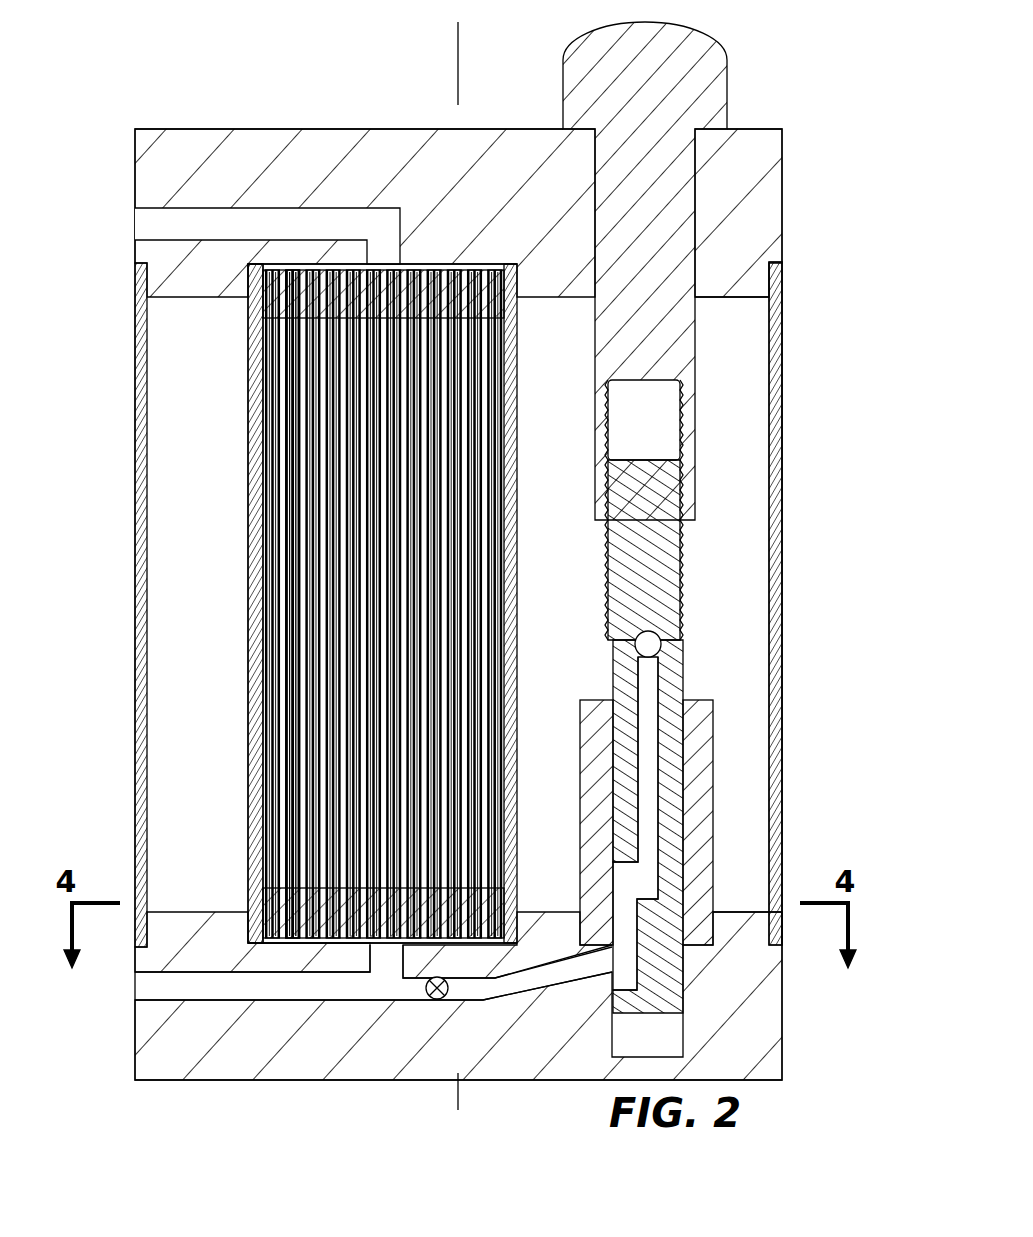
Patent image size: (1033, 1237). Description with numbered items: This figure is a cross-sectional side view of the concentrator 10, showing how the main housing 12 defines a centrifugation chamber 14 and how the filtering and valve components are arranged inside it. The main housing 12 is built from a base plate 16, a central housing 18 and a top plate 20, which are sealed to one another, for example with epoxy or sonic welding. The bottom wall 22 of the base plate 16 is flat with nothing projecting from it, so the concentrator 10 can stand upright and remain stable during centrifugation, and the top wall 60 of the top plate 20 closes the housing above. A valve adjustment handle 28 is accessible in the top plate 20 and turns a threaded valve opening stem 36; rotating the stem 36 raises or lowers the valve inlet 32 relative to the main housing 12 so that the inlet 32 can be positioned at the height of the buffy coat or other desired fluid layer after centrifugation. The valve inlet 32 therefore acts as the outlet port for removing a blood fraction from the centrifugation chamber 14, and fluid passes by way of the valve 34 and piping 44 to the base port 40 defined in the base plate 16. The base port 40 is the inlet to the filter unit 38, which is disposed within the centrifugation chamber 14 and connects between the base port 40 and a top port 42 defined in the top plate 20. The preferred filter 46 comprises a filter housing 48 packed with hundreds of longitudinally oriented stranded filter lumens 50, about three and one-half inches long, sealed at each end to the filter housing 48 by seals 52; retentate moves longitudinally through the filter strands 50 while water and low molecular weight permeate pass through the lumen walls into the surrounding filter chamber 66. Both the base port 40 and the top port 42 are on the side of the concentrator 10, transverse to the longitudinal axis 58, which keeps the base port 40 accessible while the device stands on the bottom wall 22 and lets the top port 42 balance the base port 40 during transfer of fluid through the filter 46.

The concentrator 10 is at (127, 103).
The main housing 12 is at (790, 326).
The centrifugation chamber 14 is at (170, 371).
The base plate 16 is at (750, 1032).
The central housing 18 is at (780, 413).
The top plate 20 is at (767, 192).
The bottom wall 22 is at (275, 1080).
The valve adjustment handle 28 is at (713, 88).
The valve inlet 32 is at (612, 650).
The valve 34 is at (438, 1000).
The threaded valve opening stem 36 is at (667, 563).
The filter unit 38 is at (368, 603).
The base port 40 is at (135, 985).
The top port 42 is at (135, 228).
The piping 44 is at (645, 803).
The filter 46 is at (283, 868).
The filter housing 48 is at (250, 588).
The filter strands 50 is at (277, 542).
The seals 52 is at (483, 302).
The longitudinal axis 58 is at (458, 72).
The top wall 60 is at (243, 129).
The filter chamber 66 is at (283, 665).